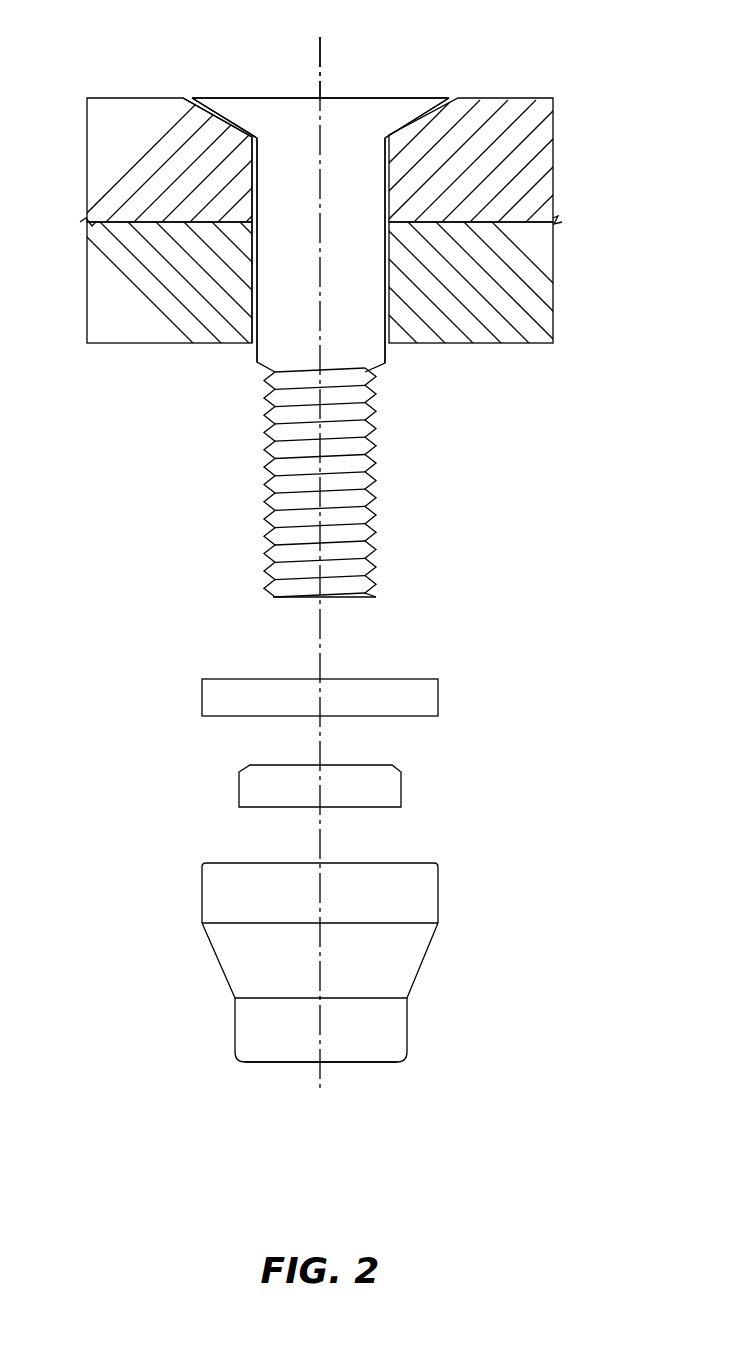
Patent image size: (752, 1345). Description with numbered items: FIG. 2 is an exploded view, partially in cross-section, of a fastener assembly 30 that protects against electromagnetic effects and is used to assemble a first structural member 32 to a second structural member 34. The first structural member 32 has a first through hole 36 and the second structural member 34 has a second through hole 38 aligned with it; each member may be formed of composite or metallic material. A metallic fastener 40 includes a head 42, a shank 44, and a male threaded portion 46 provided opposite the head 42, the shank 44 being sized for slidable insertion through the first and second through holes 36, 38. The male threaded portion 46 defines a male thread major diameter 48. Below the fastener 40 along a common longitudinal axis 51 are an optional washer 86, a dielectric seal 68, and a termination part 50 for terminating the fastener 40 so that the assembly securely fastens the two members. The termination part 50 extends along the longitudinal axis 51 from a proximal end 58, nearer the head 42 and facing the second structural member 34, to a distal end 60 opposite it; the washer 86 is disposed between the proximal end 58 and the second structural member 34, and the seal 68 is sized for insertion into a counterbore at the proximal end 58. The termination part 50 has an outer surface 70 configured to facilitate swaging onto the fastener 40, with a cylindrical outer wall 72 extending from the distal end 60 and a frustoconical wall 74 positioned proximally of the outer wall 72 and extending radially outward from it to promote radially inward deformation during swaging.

The fastener assembly 30 is at (176, 607).
The first structural member 32 is at (540, 133).
The second structural member 34 is at (540, 285).
The first through hole 36 is at (252, 187).
The second through hole 38 is at (252, 300).
The fastener 40 is at (348, 170).
The head 42 is at (243, 110).
The shank 44 is at (363, 327).
The male threaded portion 46 is at (375, 521).
The male thread major diameter 48 is at (264, 592).
The longitudinal axis 51 is at (322, 58).
The washer 86 is at (438, 697).
The seal 68 is at (401, 793).
The termination part 50 is at (450, 938).
The proximal end 58 is at (400, 863).
The outer surface 70 is at (192, 923).
The frustoconical wall 74 is at (220, 970).
The outer wall 72 is at (237, 1029).
The distal end 60 is at (382, 1062).